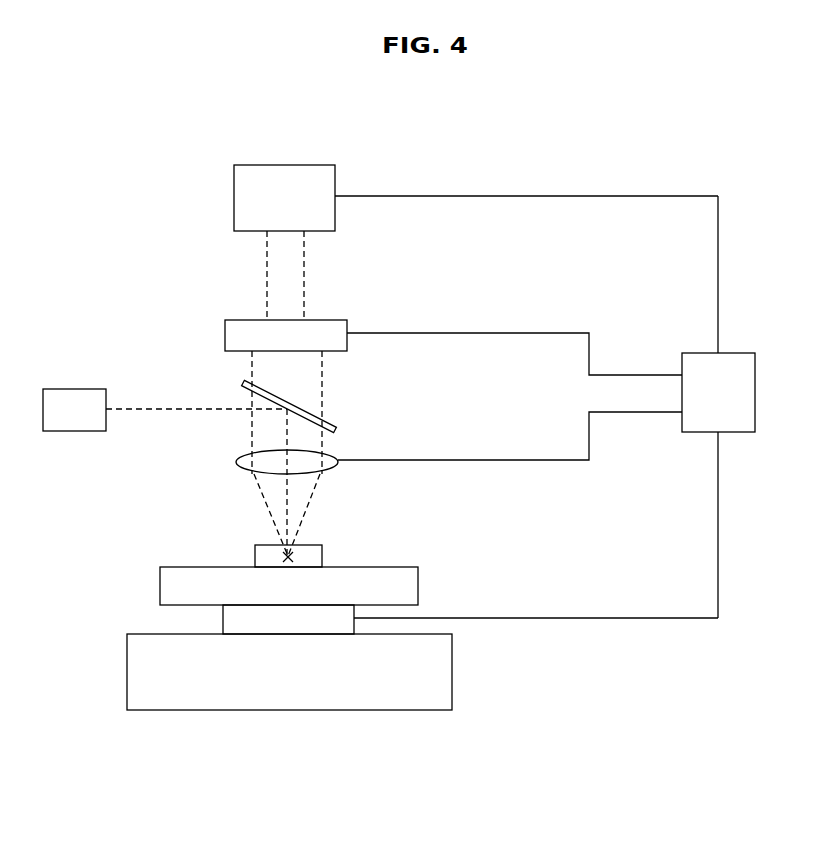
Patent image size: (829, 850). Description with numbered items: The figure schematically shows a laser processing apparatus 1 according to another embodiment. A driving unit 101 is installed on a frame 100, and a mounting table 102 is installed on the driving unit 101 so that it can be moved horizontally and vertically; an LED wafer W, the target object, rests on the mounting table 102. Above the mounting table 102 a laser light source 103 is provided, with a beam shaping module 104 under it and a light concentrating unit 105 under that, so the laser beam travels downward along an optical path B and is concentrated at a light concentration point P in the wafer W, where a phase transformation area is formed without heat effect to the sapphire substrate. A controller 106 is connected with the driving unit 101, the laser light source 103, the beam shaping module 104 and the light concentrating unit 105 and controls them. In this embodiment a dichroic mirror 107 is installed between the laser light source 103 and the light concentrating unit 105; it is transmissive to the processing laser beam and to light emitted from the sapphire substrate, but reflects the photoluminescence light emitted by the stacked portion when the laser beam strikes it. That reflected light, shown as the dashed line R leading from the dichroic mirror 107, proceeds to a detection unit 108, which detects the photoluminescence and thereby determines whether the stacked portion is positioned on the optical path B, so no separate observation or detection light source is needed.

The laser processing apparatus 1 is at (644, 162).
The frame 100 is at (133, 677).
The driving unit 101 is at (236, 620).
The mounting table 102 is at (166, 582).
The laser light source 103 is at (240, 196).
The beam shaping module 104 is at (234, 336).
The light concentrating unit 105 is at (240, 462).
The controller 106 is at (752, 398).
The dichroic mirror 107 is at (330, 424).
The detection unit 108 is at (78, 388).
The reference light R is at (146, 411).
The optical path B is at (312, 503).
The LED wafer W is at (258, 558).
The light concentration point P is at (294, 557).